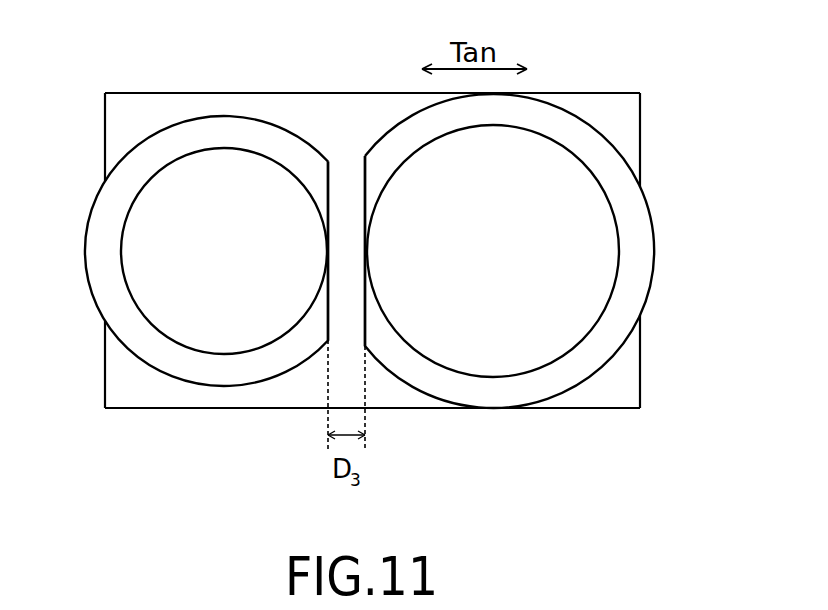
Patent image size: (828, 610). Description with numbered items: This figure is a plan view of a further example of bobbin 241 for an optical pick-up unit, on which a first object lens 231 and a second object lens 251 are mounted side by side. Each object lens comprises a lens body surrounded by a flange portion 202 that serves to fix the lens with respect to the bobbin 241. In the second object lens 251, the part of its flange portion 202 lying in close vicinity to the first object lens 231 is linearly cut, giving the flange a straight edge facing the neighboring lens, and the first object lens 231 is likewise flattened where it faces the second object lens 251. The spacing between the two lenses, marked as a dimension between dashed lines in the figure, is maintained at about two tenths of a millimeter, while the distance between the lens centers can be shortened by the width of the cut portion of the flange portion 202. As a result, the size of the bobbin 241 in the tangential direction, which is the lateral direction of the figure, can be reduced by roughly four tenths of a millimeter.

The flange portion 202 is at (210, 372).
The first object lens 231 is at (203, 170).
The bobbin 241 is at (346, 118).
The second object lens 251 is at (553, 167).